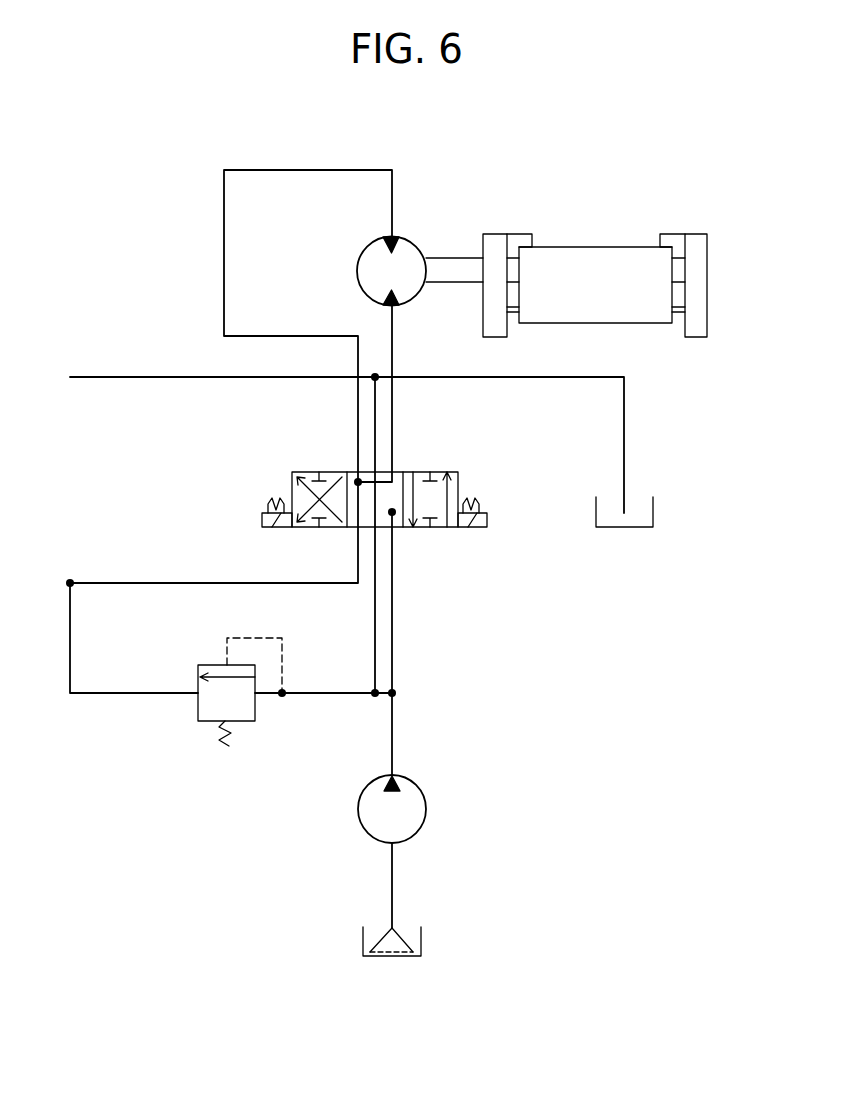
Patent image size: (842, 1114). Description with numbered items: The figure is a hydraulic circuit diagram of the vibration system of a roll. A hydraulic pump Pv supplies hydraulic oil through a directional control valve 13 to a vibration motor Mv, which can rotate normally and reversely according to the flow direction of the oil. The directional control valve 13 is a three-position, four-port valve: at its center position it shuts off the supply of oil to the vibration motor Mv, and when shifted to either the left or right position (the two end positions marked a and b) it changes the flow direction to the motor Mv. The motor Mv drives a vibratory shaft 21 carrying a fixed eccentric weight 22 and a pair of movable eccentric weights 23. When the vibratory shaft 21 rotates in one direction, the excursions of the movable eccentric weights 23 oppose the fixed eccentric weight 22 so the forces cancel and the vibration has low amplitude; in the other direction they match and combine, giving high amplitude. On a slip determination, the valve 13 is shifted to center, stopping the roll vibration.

The directional control valve 13 is at (374, 477).
The vibratory shaft 21 is at (458, 266).
The fixed eccentric weight 22 is at (577, 255).
The movable eccentric weights 23 is at (493, 240).
The vibration motor Mv is at (407, 250).
The hydraulic pump Pv is at (408, 797).
The solenoid a is at (266, 514).
The solenoid b is at (482, 514).